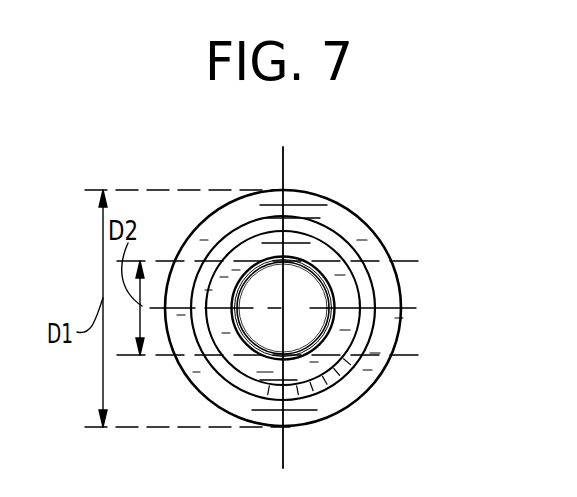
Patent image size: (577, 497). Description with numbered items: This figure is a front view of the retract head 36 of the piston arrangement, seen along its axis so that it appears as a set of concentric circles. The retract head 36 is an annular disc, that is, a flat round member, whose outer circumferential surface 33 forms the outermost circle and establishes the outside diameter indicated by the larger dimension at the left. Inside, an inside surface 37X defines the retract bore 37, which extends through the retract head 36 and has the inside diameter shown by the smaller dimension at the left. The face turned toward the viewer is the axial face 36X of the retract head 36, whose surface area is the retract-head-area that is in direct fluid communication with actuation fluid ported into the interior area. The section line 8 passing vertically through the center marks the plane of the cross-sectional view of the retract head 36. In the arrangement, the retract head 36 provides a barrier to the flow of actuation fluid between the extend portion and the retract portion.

The section line 8- 8 is at (283, 147).
The outer circumferential surface 33 is at (295, 189).
The retract head 36 is at (374, 203).
The axial face 36X is at (363, 368).
The retract bore 37 is at (302, 281).
The inside surface 37X is at (247, 337).